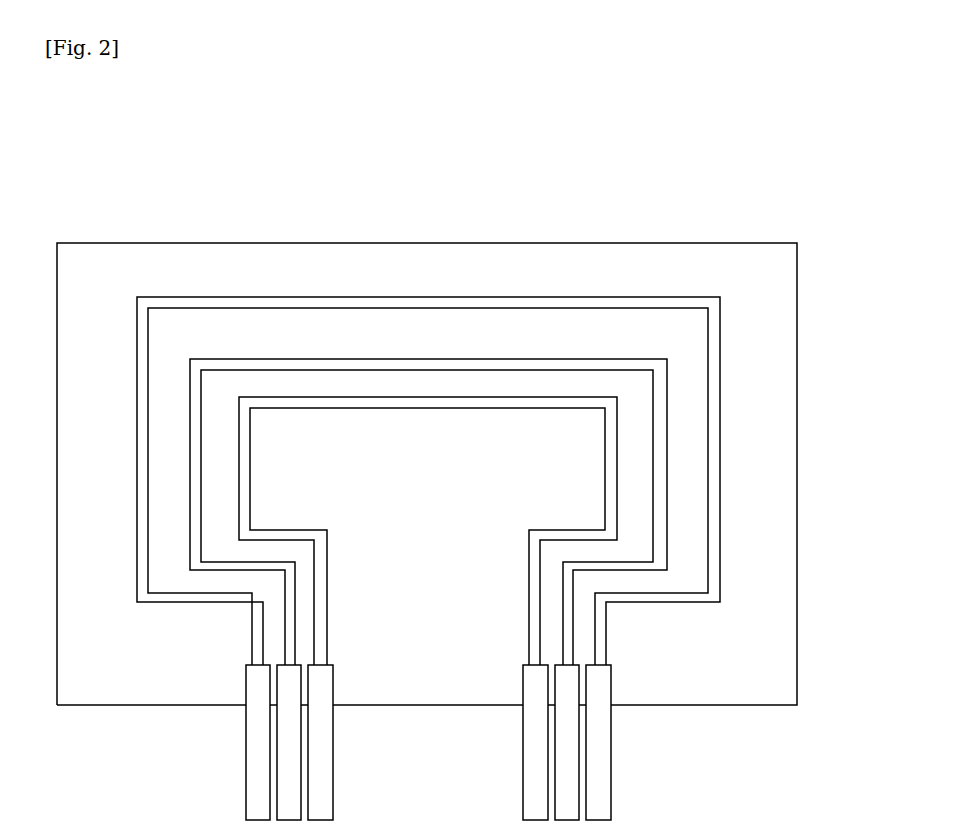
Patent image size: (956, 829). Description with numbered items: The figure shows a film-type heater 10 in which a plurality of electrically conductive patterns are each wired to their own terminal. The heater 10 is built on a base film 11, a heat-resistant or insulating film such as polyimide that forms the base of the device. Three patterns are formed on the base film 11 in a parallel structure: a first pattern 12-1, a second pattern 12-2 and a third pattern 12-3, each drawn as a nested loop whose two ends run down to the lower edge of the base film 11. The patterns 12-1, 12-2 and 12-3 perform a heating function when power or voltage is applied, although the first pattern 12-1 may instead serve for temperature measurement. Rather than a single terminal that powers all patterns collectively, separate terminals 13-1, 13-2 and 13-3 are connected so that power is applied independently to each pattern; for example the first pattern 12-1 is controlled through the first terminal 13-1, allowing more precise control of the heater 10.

The film-type heater 10 is at (571, 152).
The base film 11 is at (520, 243).
The first pattern 12-1 is at (284, 397).
The second pattern 12-2 is at (365, 359).
The third pattern 12-3 is at (443, 297).
The first terminal 13-1 is at (246, 742).
The second terminal 13-2 is at (287, 780).
The third terminal 13-3 is at (333, 783).